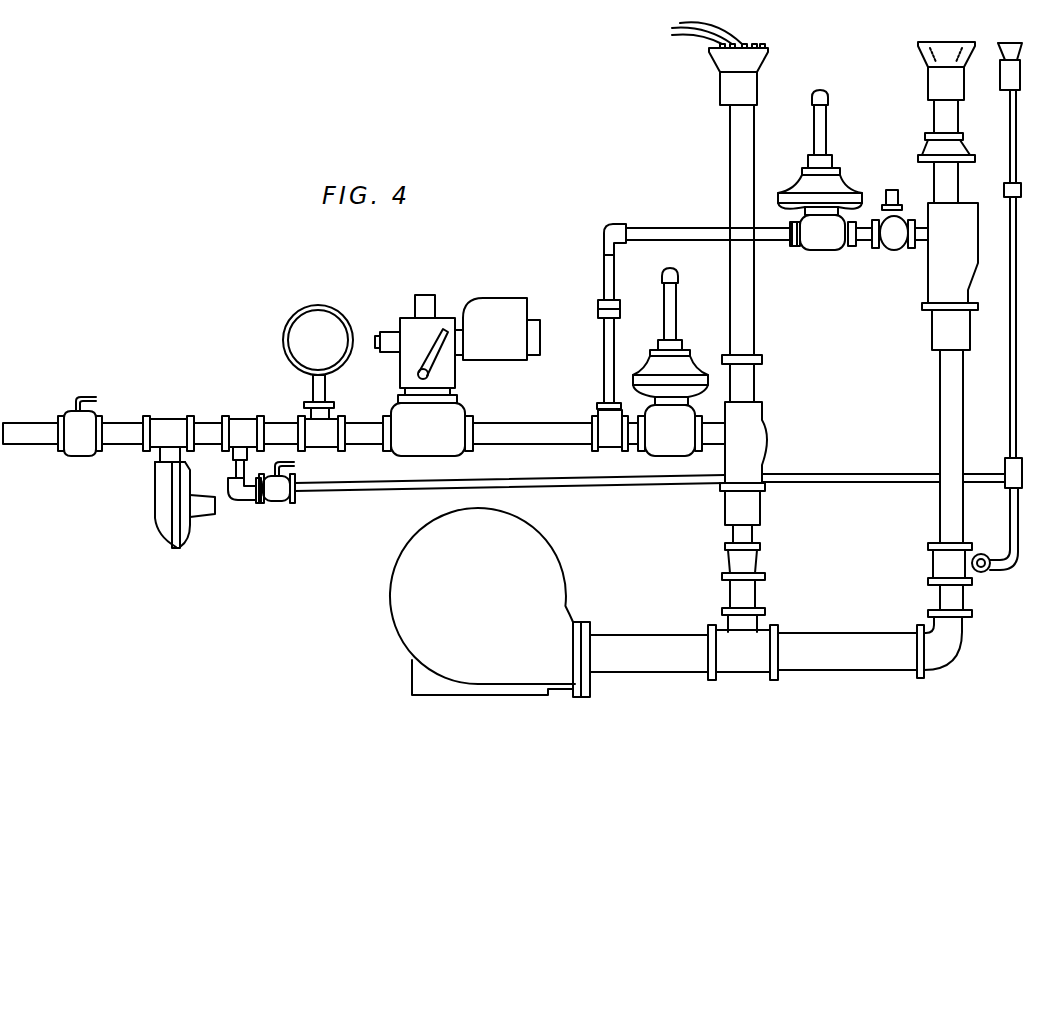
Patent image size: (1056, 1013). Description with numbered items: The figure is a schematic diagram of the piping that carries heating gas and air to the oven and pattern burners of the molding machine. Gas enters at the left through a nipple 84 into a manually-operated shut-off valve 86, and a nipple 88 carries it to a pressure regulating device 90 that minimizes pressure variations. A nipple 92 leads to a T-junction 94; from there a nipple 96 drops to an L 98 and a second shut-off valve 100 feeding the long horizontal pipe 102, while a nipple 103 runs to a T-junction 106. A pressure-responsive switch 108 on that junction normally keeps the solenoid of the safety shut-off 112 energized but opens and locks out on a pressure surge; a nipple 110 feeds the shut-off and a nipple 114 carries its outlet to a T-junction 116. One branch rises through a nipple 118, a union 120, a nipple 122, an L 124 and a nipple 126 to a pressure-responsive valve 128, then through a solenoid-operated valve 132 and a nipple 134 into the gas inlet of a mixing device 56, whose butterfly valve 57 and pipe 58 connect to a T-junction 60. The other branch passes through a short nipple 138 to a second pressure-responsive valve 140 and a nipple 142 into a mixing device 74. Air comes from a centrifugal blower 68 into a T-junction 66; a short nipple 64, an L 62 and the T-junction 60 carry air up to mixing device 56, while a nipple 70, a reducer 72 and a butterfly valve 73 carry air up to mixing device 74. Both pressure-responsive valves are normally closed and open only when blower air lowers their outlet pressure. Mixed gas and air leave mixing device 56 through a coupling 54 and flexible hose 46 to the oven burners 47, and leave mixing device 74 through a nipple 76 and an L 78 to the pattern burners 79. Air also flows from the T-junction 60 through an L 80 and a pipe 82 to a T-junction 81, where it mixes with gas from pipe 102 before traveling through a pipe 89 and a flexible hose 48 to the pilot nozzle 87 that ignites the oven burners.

The flexible hose 46 is at (935, 122).
The burners 47 is at (928, 66).
The flexible hose 48 is at (1010, 113).
The coupling 54 is at (960, 153).
The mixing device 56 is at (932, 276).
The butterfly valve 57 is at (938, 337).
The pipe 58 is at (942, 440).
The T-junction 60 is at (932, 563).
The L 62 is at (955, 650).
The short nipple 64 is at (851, 665).
The T-junction 66 is at (750, 668).
The centrifugal blower 68 is at (398, 612).
The nipple 70 is at (756, 595).
The reducer 72 is at (753, 562).
The butterfly valve 73 is at (753, 512).
The mixing device 74 is at (764, 432).
The nipple 76 is at (753, 384).
The L 78 is at (731, 148).
The burners 79 is at (702, 47).
The L 80 is at (1006, 573).
The T-junction 81 is at (1003, 462).
The pipe 82 is at (1010, 528).
The nipple 84 is at (22, 427).
The manually-operated shut-off valve 86 is at (86, 445).
The pilot nozzle 87 is at (1010, 58).
The nipple 88 is at (122, 426).
The pipe 89 is at (1015, 237).
The pressure regulating device 90 is at (156, 515).
The nipple 92 is at (207, 428).
The T-junction 94 is at (245, 430).
The nipple 96 is at (236, 468).
The L 98 is at (240, 502).
The manually-operated shut-off valve 100 is at (290, 503).
The pipe 102 is at (378, 490).
The nipple 103 is at (272, 430).
The T-junction 106 is at (322, 440).
The pressure-responsive switch 108 is at (298, 333).
The nipple 110 is at (356, 428).
The safety shut-off 112 is at (486, 315).
The nipple 114 is at (517, 428).
The T-junction 116 is at (606, 420).
The nipple 118 is at (604, 345).
The union 120 is at (600, 308).
The nipple 122 is at (600, 268).
The L 124 is at (607, 230).
The nipple 126 is at (676, 228).
The pressure-responsive valve 128 is at (808, 195).
The solenoid-operated valve 132 is at (880, 215).
The nipple 134 is at (912, 222).
The short nipple 138 is at (637, 446).
The pressure-responsive valve 140 is at (676, 362).
The nipple 142 is at (711, 440).